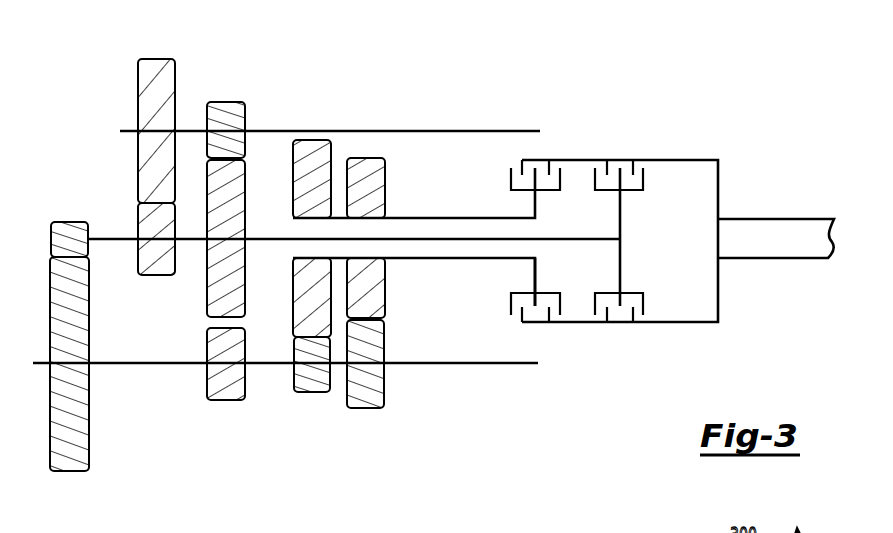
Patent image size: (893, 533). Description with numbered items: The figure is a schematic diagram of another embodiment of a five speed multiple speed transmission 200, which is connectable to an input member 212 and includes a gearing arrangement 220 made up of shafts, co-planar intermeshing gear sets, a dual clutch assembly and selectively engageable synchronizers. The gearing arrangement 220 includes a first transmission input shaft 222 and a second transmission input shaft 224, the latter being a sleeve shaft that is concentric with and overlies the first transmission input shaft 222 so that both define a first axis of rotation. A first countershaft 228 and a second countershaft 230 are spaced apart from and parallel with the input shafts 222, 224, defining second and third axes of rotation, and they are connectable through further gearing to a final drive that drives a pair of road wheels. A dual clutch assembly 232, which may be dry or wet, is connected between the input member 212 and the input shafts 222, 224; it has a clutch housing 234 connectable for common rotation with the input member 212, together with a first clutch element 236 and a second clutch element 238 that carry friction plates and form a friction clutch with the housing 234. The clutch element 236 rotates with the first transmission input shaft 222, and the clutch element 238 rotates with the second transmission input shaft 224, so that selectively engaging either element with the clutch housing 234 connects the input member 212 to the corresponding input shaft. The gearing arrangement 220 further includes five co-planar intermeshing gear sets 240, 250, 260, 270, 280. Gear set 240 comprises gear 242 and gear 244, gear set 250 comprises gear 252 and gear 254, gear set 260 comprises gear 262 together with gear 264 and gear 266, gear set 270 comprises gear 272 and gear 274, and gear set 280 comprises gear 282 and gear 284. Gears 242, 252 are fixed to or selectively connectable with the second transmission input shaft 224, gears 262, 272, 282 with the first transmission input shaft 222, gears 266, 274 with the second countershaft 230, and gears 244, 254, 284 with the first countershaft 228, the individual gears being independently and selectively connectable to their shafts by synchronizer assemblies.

The multiple speed transmission 200 is at (433, 266).
The input member 212 is at (812, 219).
The gearing arrangement 220 is at (326, 273).
The first transmission input shaft 222 is at (472, 258).
The second transmission input shaft 224 is at (458, 218).
The first countershaft 228 is at (493, 363).
The second countershaft 230 is at (493, 131).
The dual clutch assembly 232 is at (660, 223).
The clutch housing 234 is at (720, 308).
The first clutch element 236 is at (621, 271).
The second clutch element 238 is at (535, 280).
The co-planar gear set 240 is at (371, 297).
The gear 242 is at (370, 158).
The gear 244 is at (365, 408).
The co-planar gear set 250 is at (306, 282).
The gear 252 is at (312, 140).
The gear 254 is at (312, 392).
The co-planar gear set 260 is at (207, 287).
The gear 262 is at (207, 302).
The gear 264 is at (218, 400).
The gear 266 is at (232, 102).
The co-planar gear set 270 is at (138, 182).
The gear 272 is at (155, 276).
The gear 274 is at (155, 58).
The co-planar gear set 280 is at (62, 351).
The gear 282 is at (68, 222).
The gear 284 is at (82, 471).